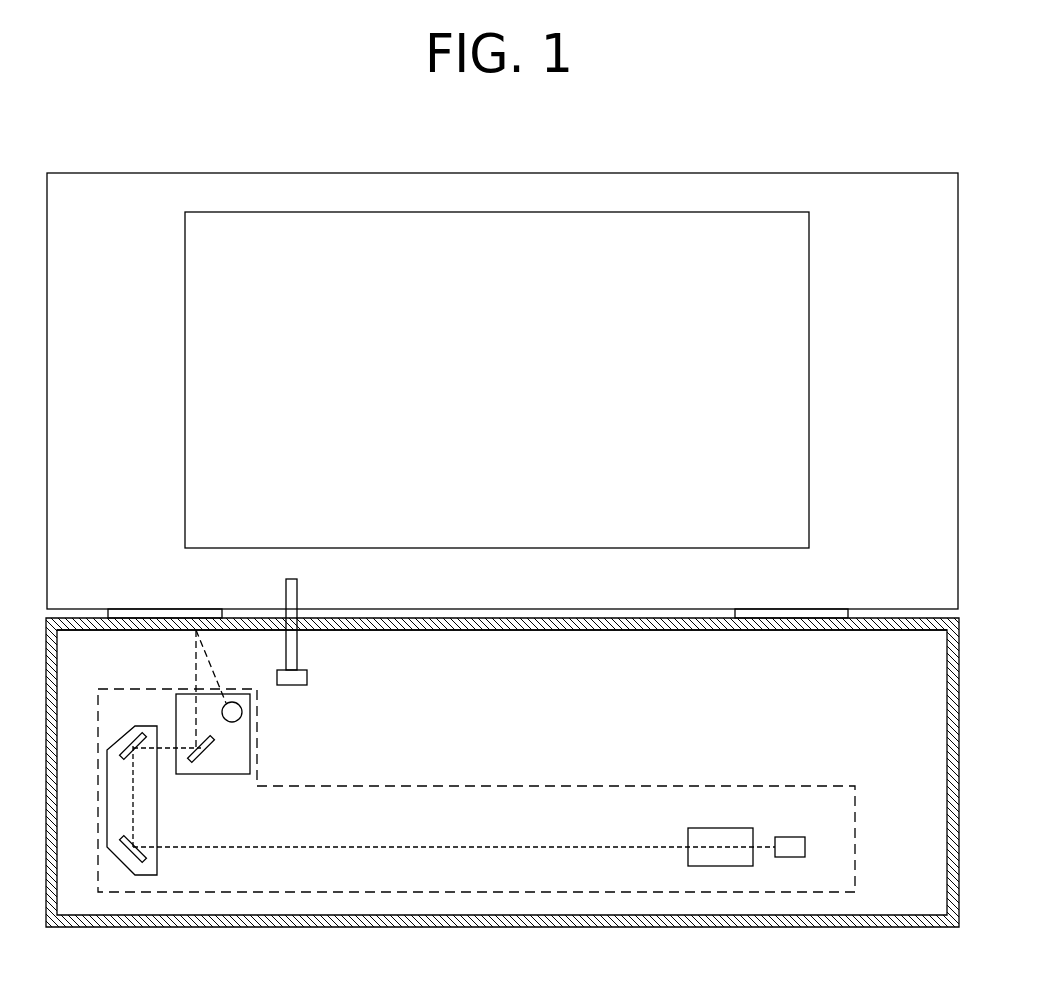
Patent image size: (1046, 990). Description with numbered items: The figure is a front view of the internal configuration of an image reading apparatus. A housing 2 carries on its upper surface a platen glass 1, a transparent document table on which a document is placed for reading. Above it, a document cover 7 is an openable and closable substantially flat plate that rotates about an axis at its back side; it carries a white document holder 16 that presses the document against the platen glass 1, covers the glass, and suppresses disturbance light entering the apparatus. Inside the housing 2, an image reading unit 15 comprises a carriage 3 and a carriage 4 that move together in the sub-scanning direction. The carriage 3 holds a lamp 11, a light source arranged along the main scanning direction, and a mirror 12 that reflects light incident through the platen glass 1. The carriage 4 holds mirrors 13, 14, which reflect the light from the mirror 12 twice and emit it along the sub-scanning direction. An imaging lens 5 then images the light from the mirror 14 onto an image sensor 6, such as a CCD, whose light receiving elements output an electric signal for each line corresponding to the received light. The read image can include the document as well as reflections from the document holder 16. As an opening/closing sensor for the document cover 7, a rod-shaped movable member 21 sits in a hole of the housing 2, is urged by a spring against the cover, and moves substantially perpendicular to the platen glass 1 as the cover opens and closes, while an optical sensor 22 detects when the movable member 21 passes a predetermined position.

The platen glass 1 is at (637, 629).
The housing 2 is at (858, 631).
The carriage 3 is at (178, 775).
The carriage 4 is at (107, 810).
The imaging lens 5 is at (712, 828).
The image sensor 6 is at (790, 838).
The document cover 7 is at (649, 173).
The lamp 11 is at (232, 722).
The mirror 12 is at (199, 765).
The mirror 13 is at (121, 746).
The mirror 14 is at (121, 854).
The image reading unit 15 is at (824, 786).
The document holder 16 is at (806, 340).
The movable member 21 is at (294, 592).
The optical sensor 22 is at (306, 672).